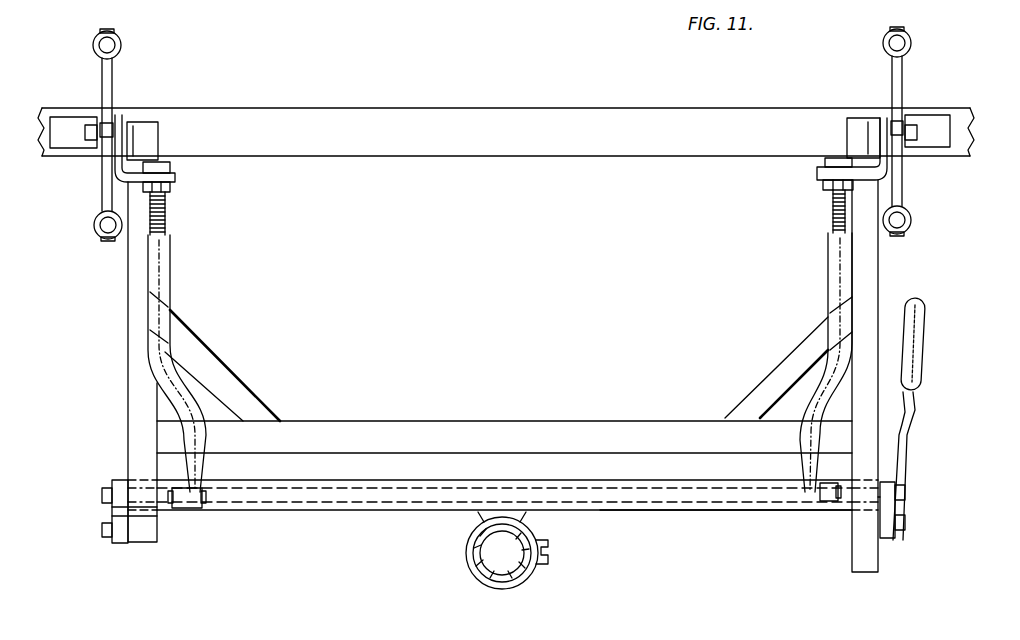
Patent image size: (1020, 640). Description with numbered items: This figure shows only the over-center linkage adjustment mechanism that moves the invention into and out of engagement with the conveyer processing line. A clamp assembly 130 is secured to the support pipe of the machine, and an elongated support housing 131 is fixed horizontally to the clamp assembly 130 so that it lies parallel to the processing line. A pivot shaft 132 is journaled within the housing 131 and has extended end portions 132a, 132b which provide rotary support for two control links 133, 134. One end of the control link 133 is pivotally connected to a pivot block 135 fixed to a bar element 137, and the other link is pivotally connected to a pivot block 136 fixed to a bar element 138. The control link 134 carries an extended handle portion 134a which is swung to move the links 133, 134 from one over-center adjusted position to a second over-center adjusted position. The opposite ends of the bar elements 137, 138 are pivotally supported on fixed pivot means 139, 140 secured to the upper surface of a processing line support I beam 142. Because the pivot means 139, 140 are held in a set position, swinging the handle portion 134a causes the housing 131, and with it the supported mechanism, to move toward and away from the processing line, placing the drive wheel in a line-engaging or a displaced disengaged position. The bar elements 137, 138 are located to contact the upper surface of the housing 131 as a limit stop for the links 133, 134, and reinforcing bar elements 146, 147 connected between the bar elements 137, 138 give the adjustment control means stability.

The clamp assembly 130 is at (538, 528).
The elongated support housing 131 is at (690, 512).
The pivot shaft 132 is at (565, 488).
The extended end portion 132a is at (122, 495).
The extended end portion 132b is at (882, 497).
The control link 133 is at (110, 485).
The control link 134 is at (895, 472).
The extended handle portion 134a is at (917, 337).
The pivot block 135 is at (122, 530).
The pivot block 136 is at (883, 528).
The bar element 137 is at (143, 532).
The bar element 138 is at (863, 557).
The fixed pivot means 139 is at (132, 137).
The fixed pivot means 140 is at (868, 133).
The processing line support I beam 142 is at (470, 142).
The reinforcing bar element 146 is at (437, 425).
The reinforcing bar element 147 is at (233, 367).